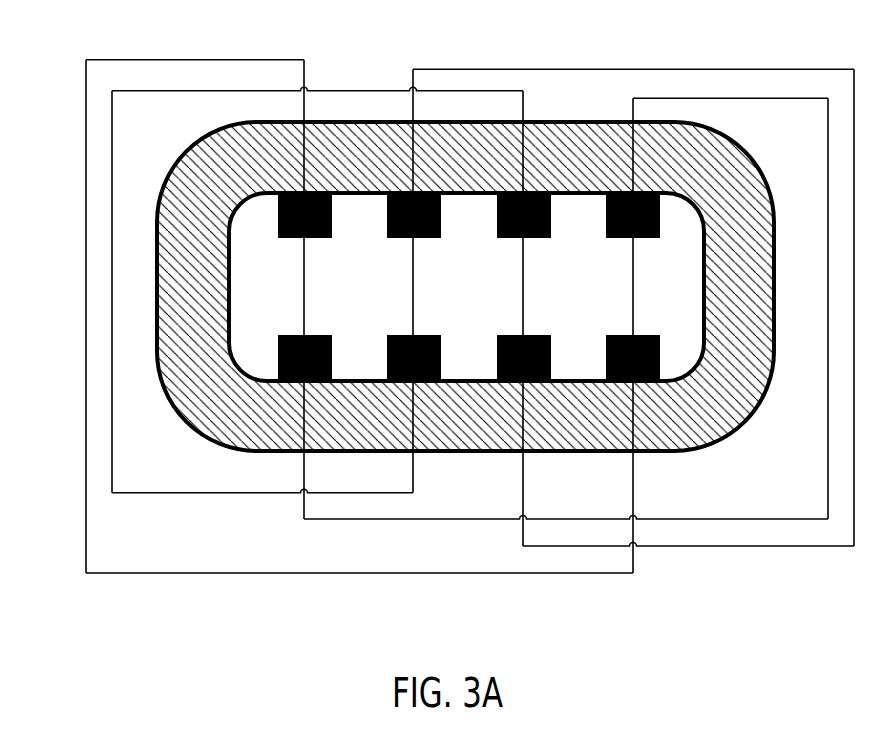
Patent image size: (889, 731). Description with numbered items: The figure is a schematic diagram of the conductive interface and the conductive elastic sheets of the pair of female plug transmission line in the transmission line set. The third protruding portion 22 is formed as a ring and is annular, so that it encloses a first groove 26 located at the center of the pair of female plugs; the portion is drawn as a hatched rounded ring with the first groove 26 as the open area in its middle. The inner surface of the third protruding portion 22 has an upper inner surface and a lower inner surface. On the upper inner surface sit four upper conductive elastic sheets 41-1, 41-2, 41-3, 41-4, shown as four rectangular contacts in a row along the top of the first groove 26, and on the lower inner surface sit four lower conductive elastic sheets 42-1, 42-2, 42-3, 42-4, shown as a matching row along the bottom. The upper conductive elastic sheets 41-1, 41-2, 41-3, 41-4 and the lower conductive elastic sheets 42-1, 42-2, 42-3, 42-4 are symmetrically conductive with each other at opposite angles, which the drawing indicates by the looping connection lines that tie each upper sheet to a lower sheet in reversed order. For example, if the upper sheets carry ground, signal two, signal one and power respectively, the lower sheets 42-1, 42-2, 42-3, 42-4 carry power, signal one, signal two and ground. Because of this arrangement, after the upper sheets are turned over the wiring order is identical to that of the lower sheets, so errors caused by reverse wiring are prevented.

The third protruding portion 22 is at (193, 278).
The first groove 26 is at (667, 311).
The upper conductive elastic sheet 41-1 is at (287, 192).
The upper conductive elastic sheet 41-2 is at (402, 192).
The upper conductive elastic sheet 41-3 is at (546, 192).
The upper conductive elastic sheet 41-4 is at (649, 192).
The lower conductive elastic sheet 42-1 is at (284, 381).
The lower conductive elastic sheet 42-2 is at (397, 382).
The lower conductive elastic sheet 42-3 is at (507, 382).
The lower conductive elastic sheet 42-4 is at (653, 382).